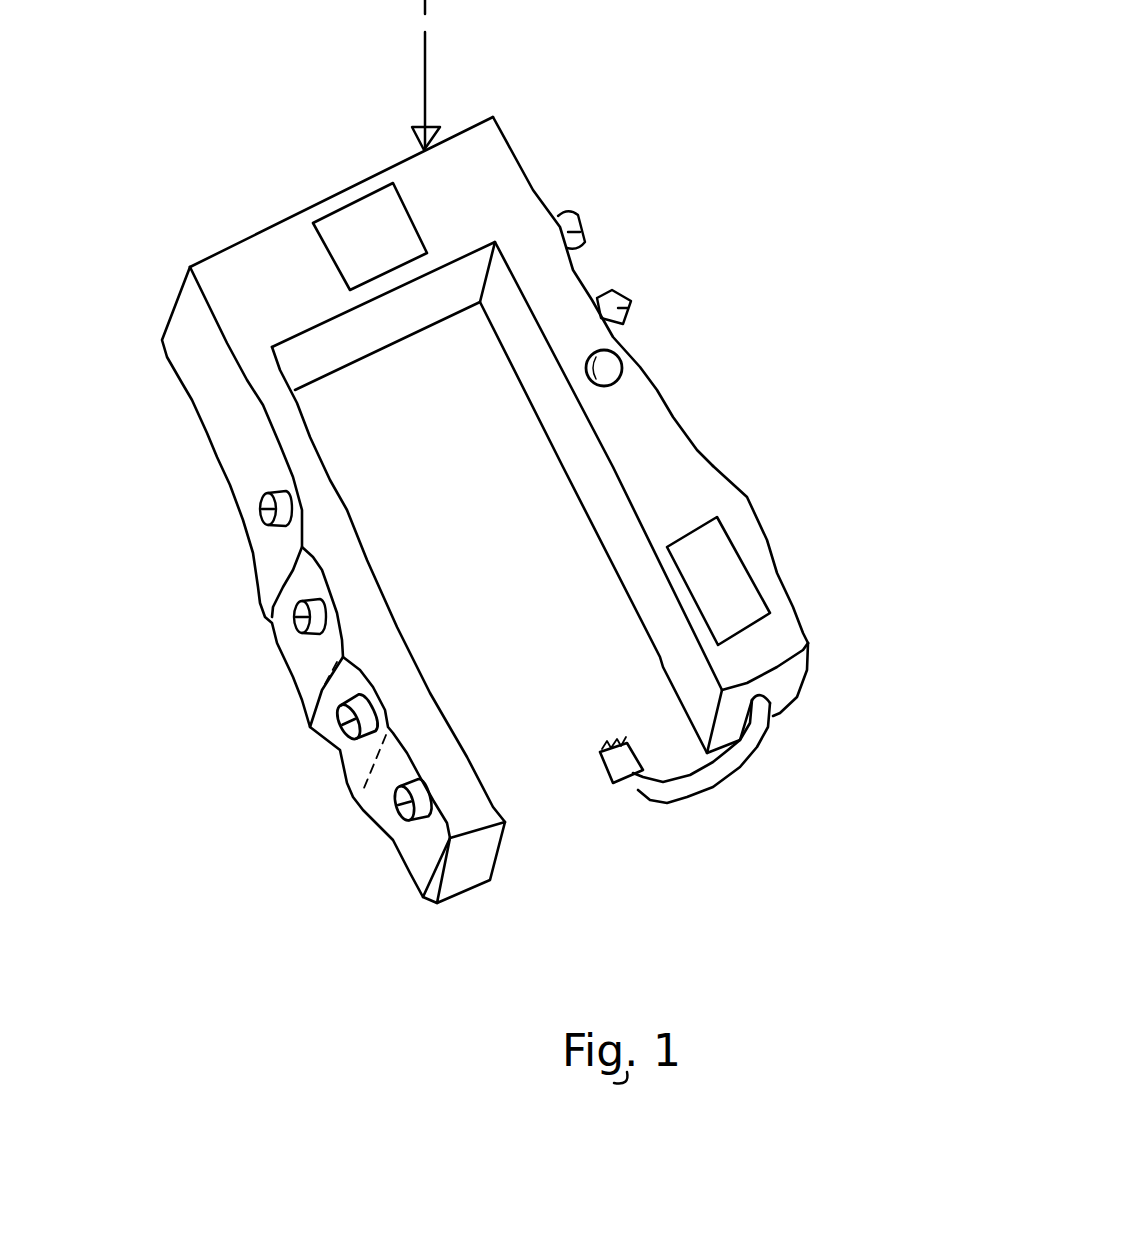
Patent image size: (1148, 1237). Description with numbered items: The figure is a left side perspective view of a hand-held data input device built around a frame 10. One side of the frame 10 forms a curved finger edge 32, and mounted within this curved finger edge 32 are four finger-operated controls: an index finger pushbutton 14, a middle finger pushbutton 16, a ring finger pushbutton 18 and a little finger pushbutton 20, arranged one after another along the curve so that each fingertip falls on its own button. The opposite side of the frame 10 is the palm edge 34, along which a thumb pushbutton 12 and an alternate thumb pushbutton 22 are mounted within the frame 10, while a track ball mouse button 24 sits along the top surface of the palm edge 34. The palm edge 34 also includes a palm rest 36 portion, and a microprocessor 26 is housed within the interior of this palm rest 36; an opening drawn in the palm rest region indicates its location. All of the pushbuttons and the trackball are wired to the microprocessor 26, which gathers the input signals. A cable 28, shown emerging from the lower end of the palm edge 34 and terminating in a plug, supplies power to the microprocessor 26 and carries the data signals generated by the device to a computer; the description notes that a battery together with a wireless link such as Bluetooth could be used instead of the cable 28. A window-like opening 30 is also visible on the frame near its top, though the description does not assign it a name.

The frame 10 is at (260, 312).
The thumb pushbutton 12 is at (618, 308).
The index finger pushbutton 14 is at (262, 510).
The middle finger pushbutton 16 is at (298, 623).
The ring finger pushbutton 18 is at (350, 720).
The little finger pushbutton 20 is at (403, 803).
The alternate thumb pushbutton 22 is at (580, 232).
The track ball mouse button 24 is at (616, 366).
The microprocessor 26 is at (733, 605).
The cable 28 is at (680, 790).
The window 30 is at (360, 235).
The curved finger edge 32 is at (317, 663).
The palm edge 34 is at (717, 467).
The palm rest 36 is at (772, 552).